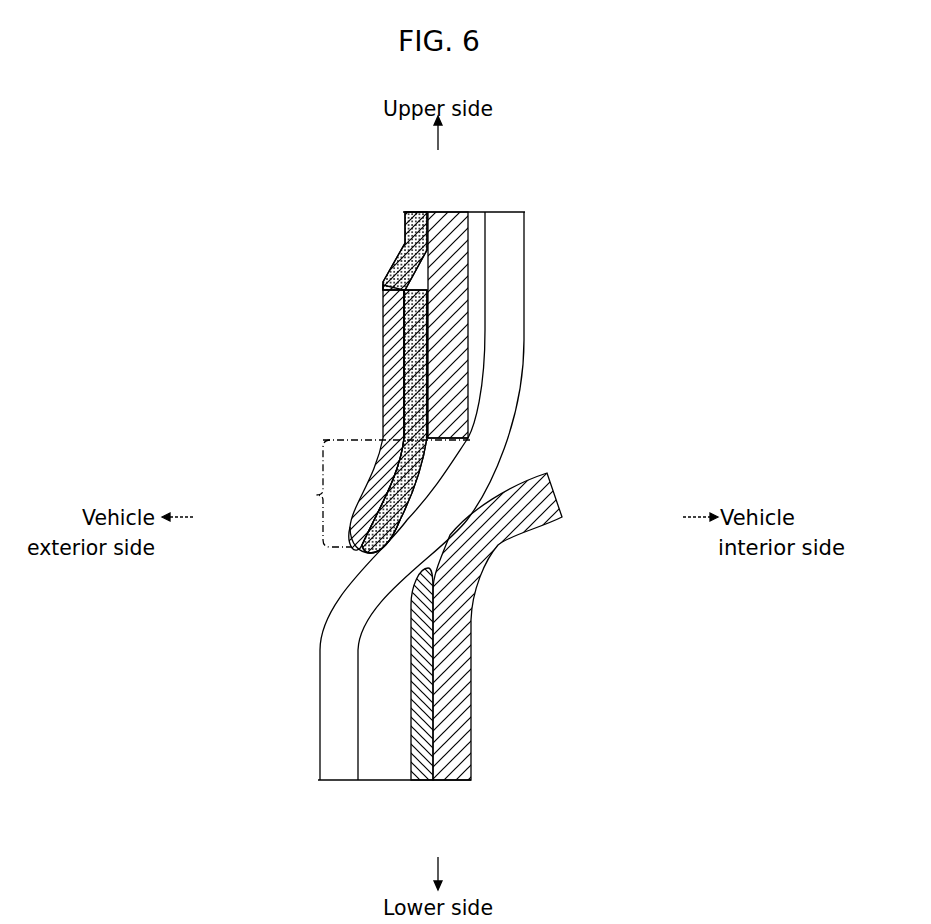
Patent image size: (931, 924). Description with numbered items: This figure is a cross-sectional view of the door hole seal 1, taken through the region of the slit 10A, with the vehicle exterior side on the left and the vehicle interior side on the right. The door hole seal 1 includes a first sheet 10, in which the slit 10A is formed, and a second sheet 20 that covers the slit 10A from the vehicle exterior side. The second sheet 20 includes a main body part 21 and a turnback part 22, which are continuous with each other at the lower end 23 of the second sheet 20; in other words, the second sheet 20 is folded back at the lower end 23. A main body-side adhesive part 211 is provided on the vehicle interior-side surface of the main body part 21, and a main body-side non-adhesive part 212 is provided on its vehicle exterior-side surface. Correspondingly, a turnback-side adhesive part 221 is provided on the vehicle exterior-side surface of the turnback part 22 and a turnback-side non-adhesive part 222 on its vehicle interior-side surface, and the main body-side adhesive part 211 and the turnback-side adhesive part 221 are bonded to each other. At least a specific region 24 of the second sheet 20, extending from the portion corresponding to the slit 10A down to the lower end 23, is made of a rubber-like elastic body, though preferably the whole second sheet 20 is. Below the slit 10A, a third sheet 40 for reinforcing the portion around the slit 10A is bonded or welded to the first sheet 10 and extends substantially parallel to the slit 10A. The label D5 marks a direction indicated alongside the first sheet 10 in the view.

The door hole seal 1 is at (596, 195).
The first sheet 10 is at (456, 216).
The slit 10A is at (450, 440).
The second sheet 20 is at (410, 233).
The main body part 21 is at (295, 235).
The main body-side adhesive part 211 is at (417, 270).
The main body-side non-adhesive part 212 is at (383, 308).
The turnback part 22 is at (598, 292).
The turnback-side adhesive part 221 is at (405, 347).
The turnback-side non-adhesive part 222 is at (425, 372).
The lower end 23 is at (358, 548).
The specific region 24 is at (380, 493).
The third sheet 40 is at (420, 680).
The direction D5 is at (510, 380).